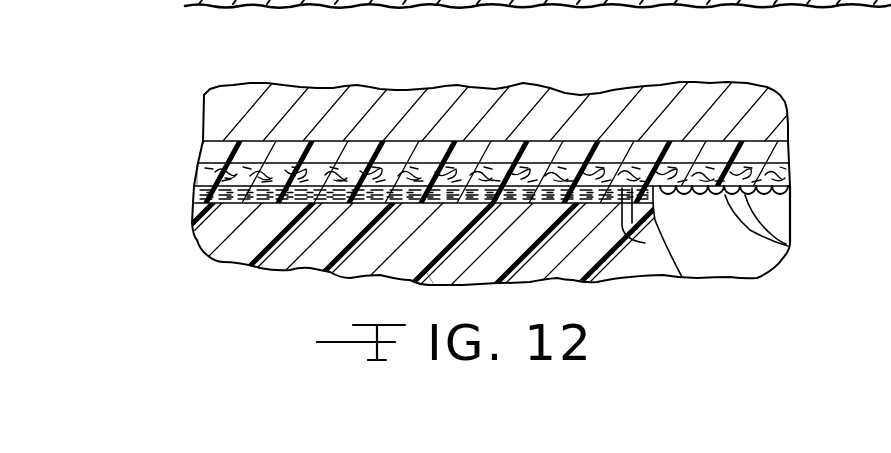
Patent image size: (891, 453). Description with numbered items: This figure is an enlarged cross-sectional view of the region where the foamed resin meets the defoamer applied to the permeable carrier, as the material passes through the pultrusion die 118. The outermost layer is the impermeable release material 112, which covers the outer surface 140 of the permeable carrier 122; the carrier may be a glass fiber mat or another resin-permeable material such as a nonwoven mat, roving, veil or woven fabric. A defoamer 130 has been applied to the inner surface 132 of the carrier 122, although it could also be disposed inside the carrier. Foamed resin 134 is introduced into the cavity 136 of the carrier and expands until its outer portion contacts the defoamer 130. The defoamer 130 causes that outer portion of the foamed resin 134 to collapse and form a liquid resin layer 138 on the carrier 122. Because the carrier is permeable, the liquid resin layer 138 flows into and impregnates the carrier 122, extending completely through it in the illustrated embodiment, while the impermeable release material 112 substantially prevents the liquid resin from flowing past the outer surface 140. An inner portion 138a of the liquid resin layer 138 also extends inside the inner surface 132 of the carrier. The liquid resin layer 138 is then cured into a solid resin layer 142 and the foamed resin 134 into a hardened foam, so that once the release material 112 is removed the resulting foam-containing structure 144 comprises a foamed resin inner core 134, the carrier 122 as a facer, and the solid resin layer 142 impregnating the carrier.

The impermeable release material 112 is at (787, 142).
The pultrusion die 118 is at (511, 112).
The permeable carrier 122 is at (788, 175).
The defoamer 130 is at (788, 246).
The inner surface 132 is at (792, 205).
The foamed resin 134 is at (628, 263).
The cavity 136 is at (760, 258).
The liquid resin layer 138 is at (645, 243).
The inner portion of the liquid resin layer 138a is at (433, 282).
The outer surface 140 is at (786, 151).
The solid resin layer 142 is at (197, 190).
The foam-containing structure 144 is at (188, 233).